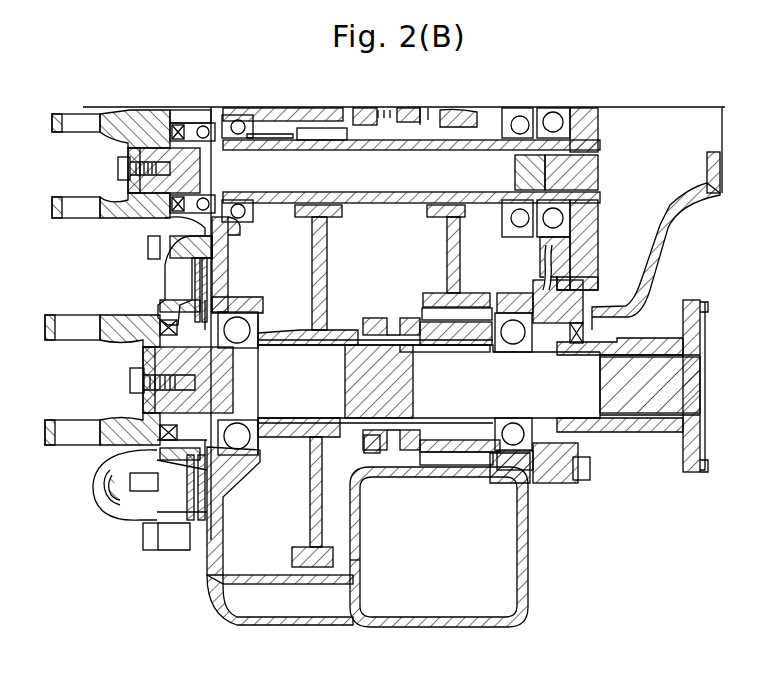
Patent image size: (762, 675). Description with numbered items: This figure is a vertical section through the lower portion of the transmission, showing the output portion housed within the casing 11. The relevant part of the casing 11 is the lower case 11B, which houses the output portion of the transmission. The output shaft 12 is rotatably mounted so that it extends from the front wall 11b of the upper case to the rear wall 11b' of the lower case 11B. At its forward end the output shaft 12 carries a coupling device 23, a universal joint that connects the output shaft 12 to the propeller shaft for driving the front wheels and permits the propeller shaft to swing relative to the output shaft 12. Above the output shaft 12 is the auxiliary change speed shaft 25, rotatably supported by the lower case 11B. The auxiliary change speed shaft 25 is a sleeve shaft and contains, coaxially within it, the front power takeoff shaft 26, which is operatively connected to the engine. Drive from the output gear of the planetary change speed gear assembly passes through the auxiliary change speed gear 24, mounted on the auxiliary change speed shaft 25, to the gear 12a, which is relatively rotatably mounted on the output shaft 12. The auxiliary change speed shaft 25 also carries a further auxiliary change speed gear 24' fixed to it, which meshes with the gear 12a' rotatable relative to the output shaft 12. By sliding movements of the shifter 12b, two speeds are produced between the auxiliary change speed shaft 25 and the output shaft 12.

The casing 11 is at (527, 583).
The lower case 11B is at (132, 282).
The front wall of the upper case 11b is at (152, 236).
The rear wall of the lower case 11b' is at (593, 255).
The output shaft 12 is at (690, 395).
The gear 12a is at (460, 497).
The gear 12a' is at (367, 563).
The shifter 12b is at (407, 455).
The coupling device 23 is at (76, 312).
The auxiliary change speed gear 24 is at (405, 327).
The further auxiliary change speed gear 24' is at (306, 386).
The auxiliary change speed shaft 25 is at (383, 200).
The front power takeoff shaft 26 is at (588, 173).